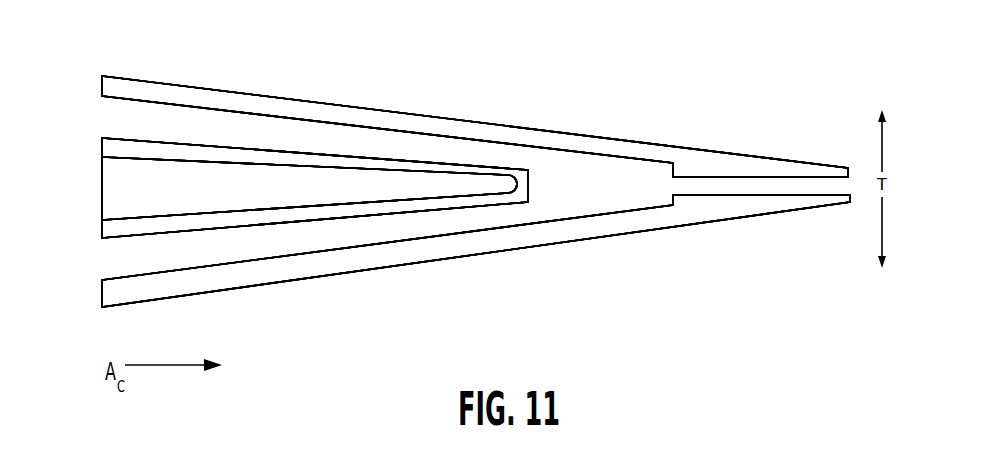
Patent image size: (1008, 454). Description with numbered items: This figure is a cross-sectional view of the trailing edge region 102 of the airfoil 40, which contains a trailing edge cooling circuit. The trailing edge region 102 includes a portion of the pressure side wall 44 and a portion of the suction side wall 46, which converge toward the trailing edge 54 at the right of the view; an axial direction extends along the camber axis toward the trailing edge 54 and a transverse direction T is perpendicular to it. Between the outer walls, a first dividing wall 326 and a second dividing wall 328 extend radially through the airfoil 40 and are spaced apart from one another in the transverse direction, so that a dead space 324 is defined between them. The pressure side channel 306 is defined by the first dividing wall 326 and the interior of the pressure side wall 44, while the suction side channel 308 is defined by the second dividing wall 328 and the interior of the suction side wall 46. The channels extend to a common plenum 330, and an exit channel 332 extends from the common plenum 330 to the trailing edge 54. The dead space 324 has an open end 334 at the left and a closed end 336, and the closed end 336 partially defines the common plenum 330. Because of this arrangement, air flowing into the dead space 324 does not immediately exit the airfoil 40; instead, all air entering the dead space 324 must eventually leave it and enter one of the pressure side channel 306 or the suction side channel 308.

The airfoil 40 is at (725, 66).
The pressure side wall 44 is at (548, 246).
The suction side wall 46 is at (499, 123).
The trailing edge 54 is at (853, 203).
The trailing edge region 102 is at (769, 123).
The pressure side channel 306 is at (316, 242).
The suction side channel 308 is at (306, 128).
The dead space 324 is at (266, 198).
The first dividing wall 326 is at (208, 222).
The second dividing wall 328 is at (168, 152).
The common plenum 330 is at (598, 198).
The exit channel 332 is at (726, 204).
The open end 334 is at (90, 190).
The closed end 336 is at (532, 163).